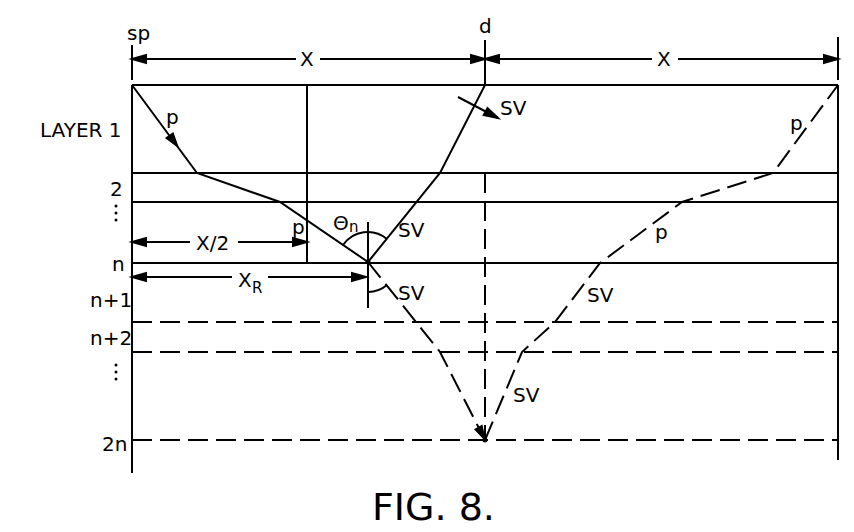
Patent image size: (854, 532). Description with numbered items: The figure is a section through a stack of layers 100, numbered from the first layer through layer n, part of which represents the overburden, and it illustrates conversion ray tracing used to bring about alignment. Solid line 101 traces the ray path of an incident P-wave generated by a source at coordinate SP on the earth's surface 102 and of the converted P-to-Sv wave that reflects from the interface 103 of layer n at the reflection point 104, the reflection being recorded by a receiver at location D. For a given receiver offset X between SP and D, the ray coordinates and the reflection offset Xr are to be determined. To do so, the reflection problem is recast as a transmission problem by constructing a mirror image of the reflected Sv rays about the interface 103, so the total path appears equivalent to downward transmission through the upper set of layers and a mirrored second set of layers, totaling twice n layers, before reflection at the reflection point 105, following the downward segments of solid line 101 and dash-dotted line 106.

The stack of layers 100 is at (88, 168).
The solid line 101 is at (234, 181).
The earth's surface 102 is at (579, 85).
The interface 103 is at (487, 263).
The reflection point 104 is at (372, 261).
The reflection point 105 is at (485, 443).
The dash-dotted line 106 is at (437, 368).